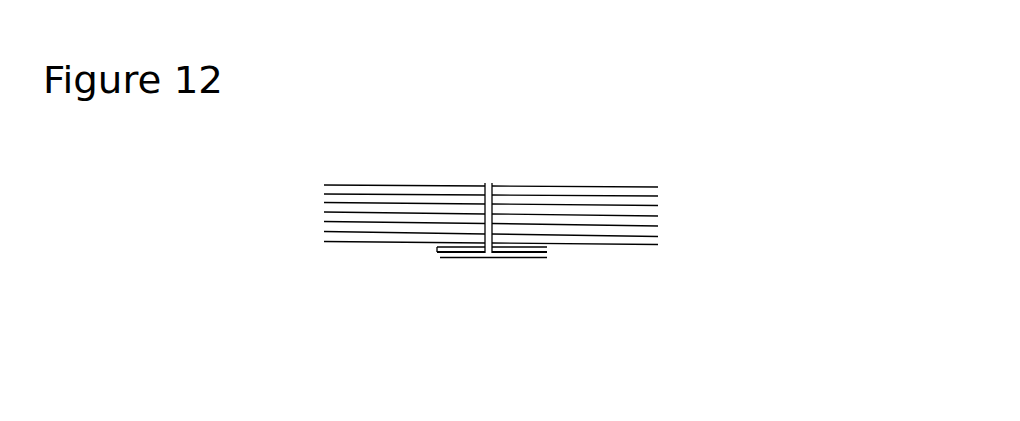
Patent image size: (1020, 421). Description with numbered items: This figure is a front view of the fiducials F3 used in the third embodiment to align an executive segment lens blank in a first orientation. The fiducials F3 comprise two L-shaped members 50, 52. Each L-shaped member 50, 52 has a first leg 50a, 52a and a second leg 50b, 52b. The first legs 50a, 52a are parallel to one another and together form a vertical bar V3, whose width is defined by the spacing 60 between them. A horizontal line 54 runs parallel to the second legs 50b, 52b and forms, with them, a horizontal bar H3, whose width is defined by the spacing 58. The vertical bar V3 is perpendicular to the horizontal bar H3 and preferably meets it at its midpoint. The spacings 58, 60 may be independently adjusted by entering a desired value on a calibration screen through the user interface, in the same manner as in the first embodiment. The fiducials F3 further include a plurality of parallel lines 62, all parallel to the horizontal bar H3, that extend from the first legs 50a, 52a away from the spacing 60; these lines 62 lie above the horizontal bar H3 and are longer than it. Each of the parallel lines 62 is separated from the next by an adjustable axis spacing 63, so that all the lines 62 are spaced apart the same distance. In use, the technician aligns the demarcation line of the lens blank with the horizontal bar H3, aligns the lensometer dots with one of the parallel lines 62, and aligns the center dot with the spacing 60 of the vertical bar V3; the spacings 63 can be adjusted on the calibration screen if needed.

The L-shaped member 50 is at (462, 240).
The first leg 50a is at (483, 208).
The second leg 50b is at (434, 253).
The L-shaped member 52 is at (503, 234).
The first leg 52a is at (498, 211).
The second leg 52b is at (540, 248).
The horizontal line 54 is at (448, 259).
The spacing 58 is at (440, 246).
The spacing 60 is at (493, 185).
The parallel lines 62 is at (313, 220).
The axis spacings 63 is at (661, 201).
The vertical bar V3 is at (491, 166).
The horizontal bar H3 is at (396, 253).
The fiducials F3 is at (730, 66).